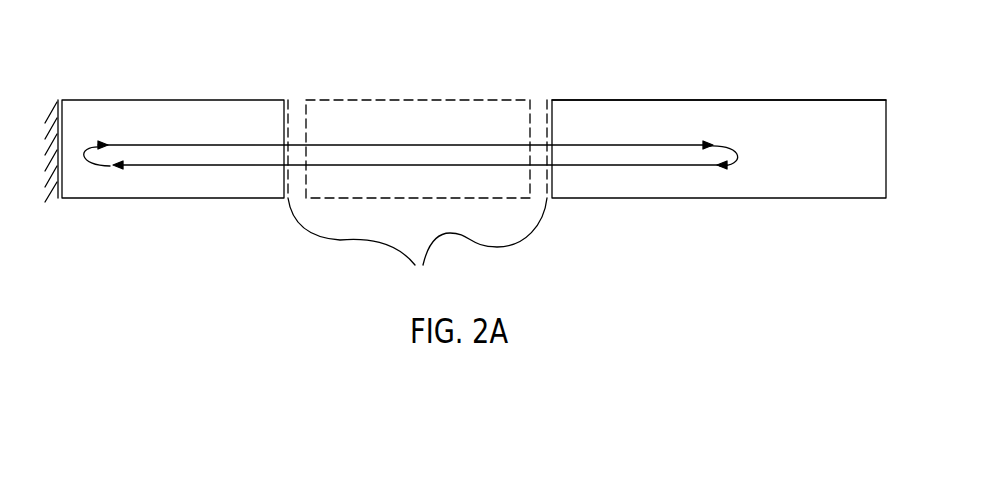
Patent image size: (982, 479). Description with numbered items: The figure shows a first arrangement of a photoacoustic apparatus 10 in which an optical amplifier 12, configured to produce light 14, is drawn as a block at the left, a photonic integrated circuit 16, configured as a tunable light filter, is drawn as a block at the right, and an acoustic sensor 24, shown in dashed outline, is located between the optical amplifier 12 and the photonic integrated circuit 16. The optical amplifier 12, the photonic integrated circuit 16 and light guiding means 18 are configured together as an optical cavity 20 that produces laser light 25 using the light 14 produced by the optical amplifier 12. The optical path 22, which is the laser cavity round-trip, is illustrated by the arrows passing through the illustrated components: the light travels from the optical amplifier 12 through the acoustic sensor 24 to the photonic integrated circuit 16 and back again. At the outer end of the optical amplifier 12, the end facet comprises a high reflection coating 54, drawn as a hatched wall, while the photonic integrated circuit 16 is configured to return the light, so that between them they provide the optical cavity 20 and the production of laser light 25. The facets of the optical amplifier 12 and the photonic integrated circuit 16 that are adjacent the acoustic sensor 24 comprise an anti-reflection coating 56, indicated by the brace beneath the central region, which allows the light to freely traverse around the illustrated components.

The photoacoustic apparatus 10 is at (842, 51).
The optical amplifier 12 is at (190, 99).
The light 14 is at (411, 202).
The laser light 25 is at (605, 180).
The photonic integrated circuit 16 is at (633, 99).
The light guiding means 18 is at (484, 51).
The optical cavity 20 is at (723, 66).
The optical path 22 is at (677, 166).
The acoustic sensor 24 is at (376, 99).
The high reflection coating 54 is at (45, 102).
The anti-reflection coating 56 is at (417, 246).